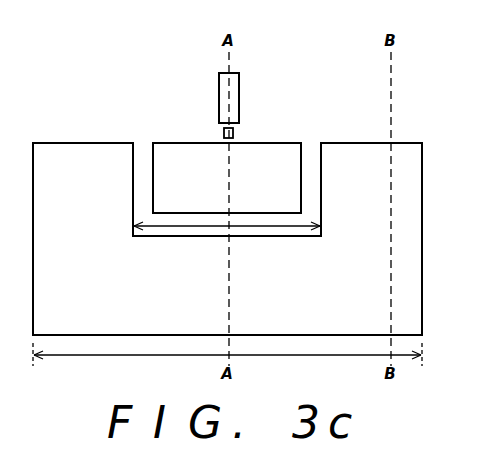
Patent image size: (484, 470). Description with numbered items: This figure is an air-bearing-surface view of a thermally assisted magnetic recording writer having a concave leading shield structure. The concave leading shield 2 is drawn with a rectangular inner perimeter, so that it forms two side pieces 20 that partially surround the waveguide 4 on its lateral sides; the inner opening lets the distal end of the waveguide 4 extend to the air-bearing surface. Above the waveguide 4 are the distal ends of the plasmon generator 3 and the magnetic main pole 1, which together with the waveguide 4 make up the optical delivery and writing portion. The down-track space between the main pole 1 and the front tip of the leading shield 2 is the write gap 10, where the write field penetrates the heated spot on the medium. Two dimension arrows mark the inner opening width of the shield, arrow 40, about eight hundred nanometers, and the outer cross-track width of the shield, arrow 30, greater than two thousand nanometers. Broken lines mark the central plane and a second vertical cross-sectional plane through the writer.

The magnetic main pole 1 is at (220, 86).
The concave leading shield 2 is at (84, 158).
The plasmon generator 3 is at (223, 131).
The waveguide 4 is at (294, 140).
The write gap 10 is at (243, 103).
The side pieces 20 is at (423, 160).
The outer x-dimension of the CLS 30 is at (140, 362).
The inner opening x-dimension of the CLS 40 is at (180, 229).